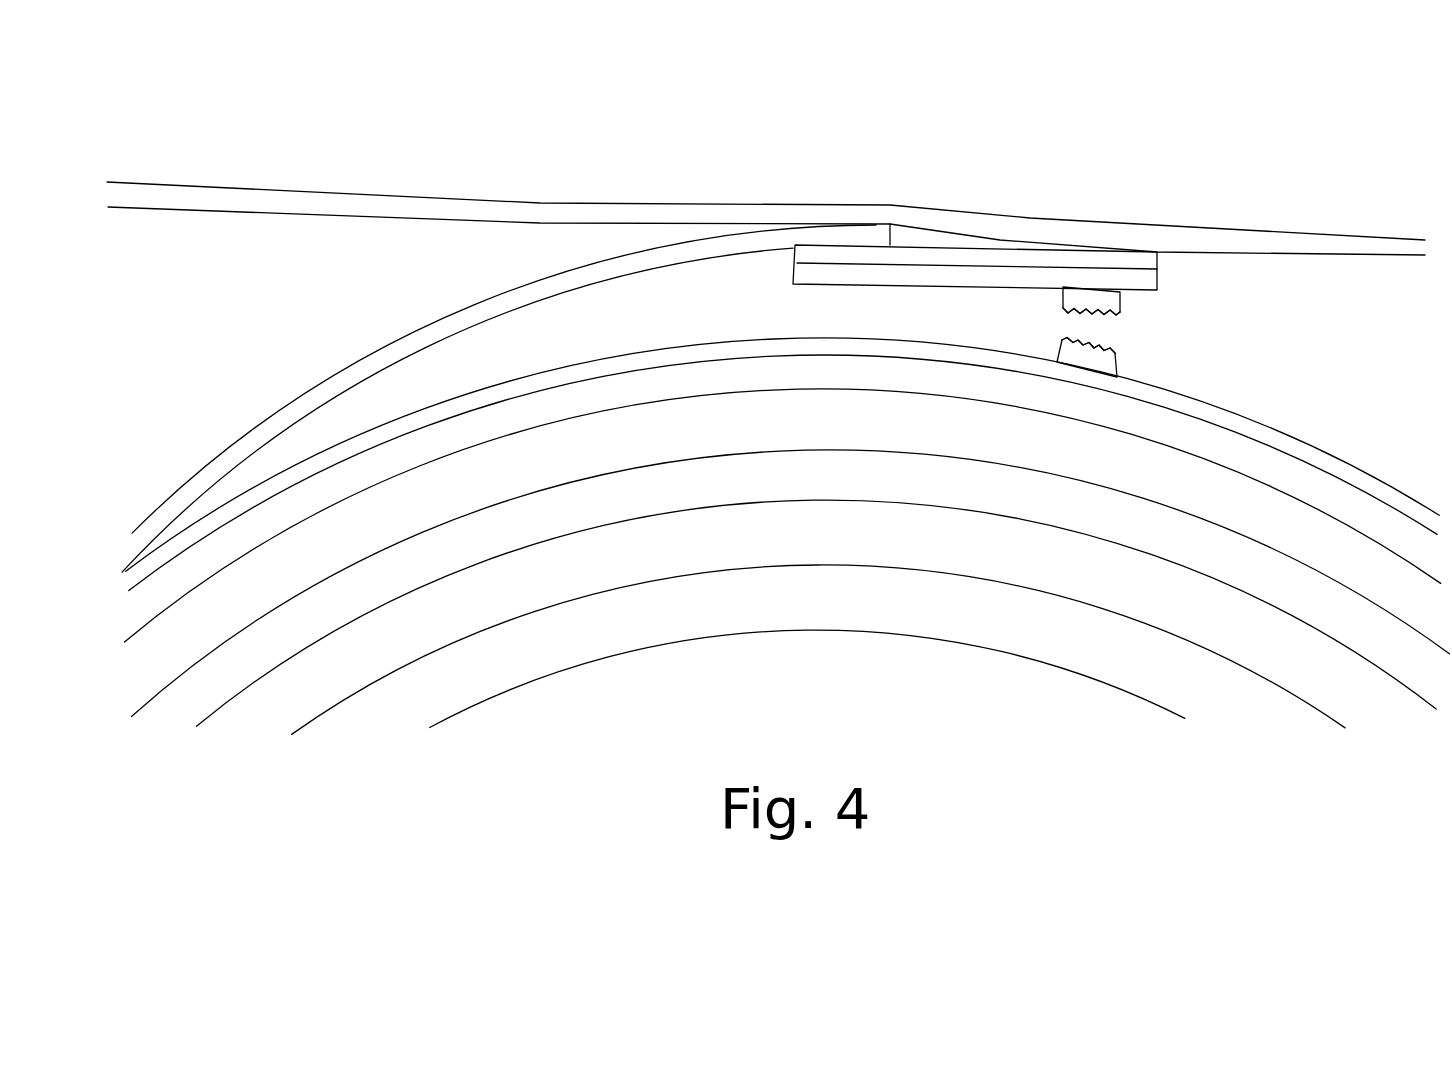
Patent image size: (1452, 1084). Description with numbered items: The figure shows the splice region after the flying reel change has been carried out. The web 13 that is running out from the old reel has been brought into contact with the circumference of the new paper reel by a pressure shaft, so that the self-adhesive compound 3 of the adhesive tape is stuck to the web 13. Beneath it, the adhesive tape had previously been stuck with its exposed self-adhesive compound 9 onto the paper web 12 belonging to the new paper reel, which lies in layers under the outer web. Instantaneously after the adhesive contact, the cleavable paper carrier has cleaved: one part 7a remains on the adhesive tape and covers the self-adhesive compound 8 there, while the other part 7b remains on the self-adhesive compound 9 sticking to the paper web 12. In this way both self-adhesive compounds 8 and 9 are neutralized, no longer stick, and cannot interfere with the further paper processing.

The web that is running out 13 is at (371, 192).
The self-adhesive compound 3 is at (1125, 262).
The self-adhesive compound 8 is at (1102, 293).
The part of cleavable paper carrier 7a is at (1120, 313).
The self-adhesive compound 9 is at (1097, 363).
The part of cleavable paper carrier 7b is at (1058, 345).
The paper web 12 is at (1375, 513).